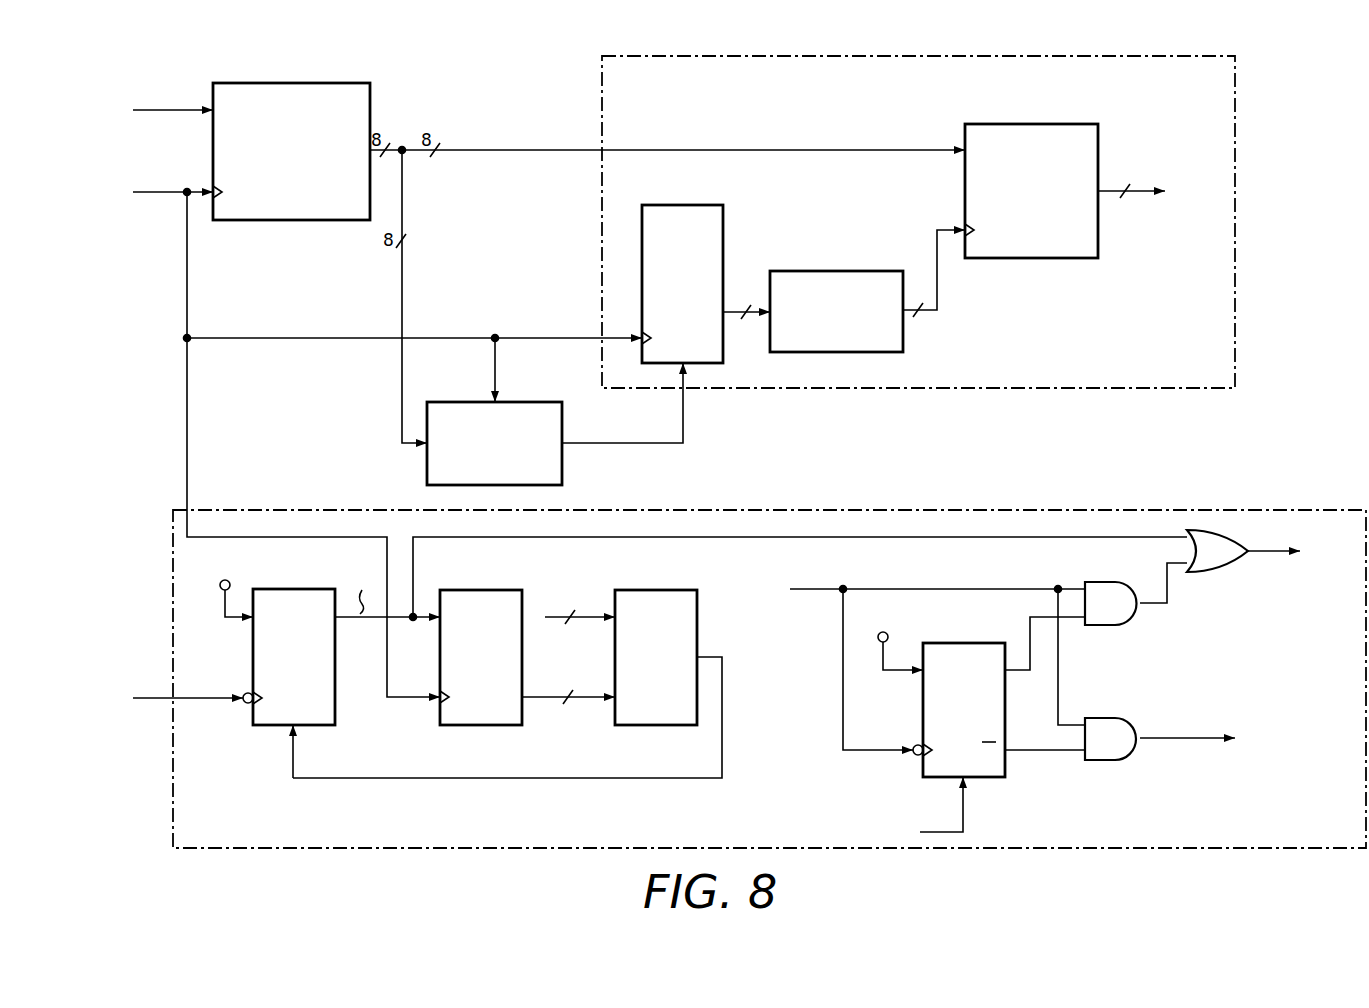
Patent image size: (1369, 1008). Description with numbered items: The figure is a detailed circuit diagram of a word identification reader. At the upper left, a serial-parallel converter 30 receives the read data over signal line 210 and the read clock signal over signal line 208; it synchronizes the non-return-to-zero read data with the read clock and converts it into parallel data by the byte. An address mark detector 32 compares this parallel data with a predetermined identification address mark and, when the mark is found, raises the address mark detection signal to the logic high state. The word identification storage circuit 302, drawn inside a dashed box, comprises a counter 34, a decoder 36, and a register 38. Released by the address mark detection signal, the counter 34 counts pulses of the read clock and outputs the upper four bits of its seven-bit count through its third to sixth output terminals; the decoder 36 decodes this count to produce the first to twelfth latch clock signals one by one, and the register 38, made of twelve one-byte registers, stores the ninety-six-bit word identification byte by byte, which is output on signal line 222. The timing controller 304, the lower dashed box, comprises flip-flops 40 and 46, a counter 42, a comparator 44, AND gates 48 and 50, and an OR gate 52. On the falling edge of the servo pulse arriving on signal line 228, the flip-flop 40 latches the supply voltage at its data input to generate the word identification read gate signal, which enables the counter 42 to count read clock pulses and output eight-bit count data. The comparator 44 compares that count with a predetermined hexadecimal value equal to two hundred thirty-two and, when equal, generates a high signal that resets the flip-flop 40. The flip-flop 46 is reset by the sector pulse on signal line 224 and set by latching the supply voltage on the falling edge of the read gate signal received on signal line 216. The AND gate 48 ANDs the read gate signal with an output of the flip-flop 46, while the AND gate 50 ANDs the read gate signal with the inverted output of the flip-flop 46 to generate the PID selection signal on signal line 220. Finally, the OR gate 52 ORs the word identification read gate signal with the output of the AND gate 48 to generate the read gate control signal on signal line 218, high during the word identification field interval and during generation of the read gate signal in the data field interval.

The serial-parallel converter 30 is at (290, 83).
The signal line 210 is at (160, 110).
The signal line 208 is at (158, 190).
The address mark detector 32 is at (546, 402).
The counter 34 is at (679, 205).
The decoder 36 is at (842, 271).
The register 38 is at (1030, 124).
The signal line 222 is at (1139, 189).
The WID storage circuit 302 is at (1235, 218).
The timing controller 304 is at (965, 510).
The flip-flop 40 is at (330, 728).
The counter 42 is at (479, 590).
The comparator 44 is at (649, 590).
The flip-flop 46 is at (962, 643).
The AND gate 48 is at (1110, 582).
The AND gate 50 is at (1109, 717).
The OR gate 52 is at (1212, 572).
The signal line 216 is at (828, 588).
The signal line 218 is at (1269, 553).
The signal line 220 is at (1186, 741).
The signal line 224 is at (963, 821).
The signal line 228 is at (148, 697).